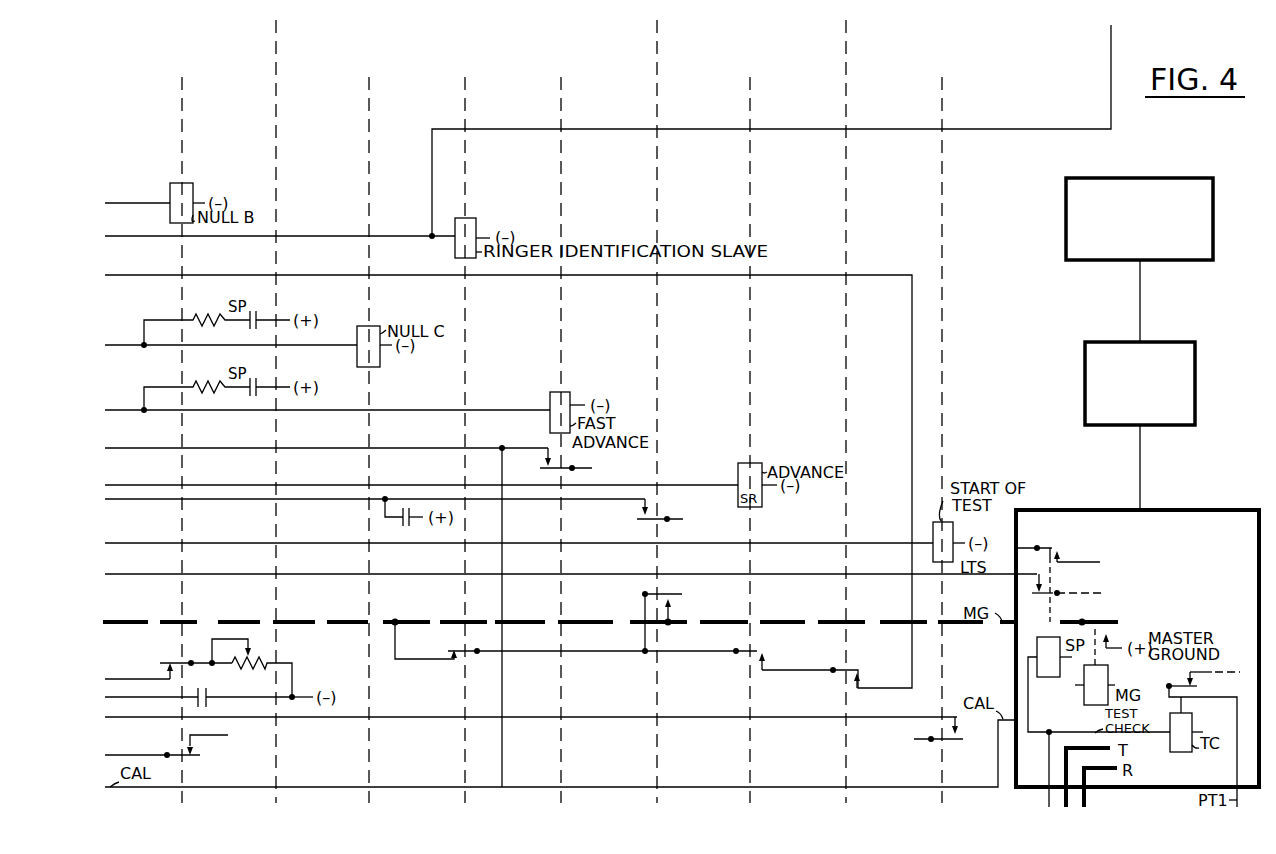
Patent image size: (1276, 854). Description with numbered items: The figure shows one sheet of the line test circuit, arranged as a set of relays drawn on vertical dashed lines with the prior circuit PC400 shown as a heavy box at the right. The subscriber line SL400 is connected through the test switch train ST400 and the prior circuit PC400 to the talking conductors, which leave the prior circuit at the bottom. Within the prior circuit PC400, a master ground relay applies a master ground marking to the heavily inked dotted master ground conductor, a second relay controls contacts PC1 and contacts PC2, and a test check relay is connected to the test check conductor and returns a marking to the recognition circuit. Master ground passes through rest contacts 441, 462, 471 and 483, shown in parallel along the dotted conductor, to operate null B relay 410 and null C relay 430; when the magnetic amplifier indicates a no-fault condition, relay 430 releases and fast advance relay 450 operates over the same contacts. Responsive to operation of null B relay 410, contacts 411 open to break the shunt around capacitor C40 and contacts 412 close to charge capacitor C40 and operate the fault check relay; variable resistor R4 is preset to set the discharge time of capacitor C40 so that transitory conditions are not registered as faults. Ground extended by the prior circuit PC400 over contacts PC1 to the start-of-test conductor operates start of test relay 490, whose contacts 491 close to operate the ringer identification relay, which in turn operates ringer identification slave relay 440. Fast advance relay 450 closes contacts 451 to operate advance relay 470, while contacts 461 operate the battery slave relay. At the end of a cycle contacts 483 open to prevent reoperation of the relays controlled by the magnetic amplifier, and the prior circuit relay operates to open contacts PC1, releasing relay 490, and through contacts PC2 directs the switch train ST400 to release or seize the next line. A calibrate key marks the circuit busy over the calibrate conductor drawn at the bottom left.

The null B relay 410 is at (182, 427).
The null C relay 430 is at (369, 427).
The ringer identification slave relay 440 is at (465, 427).
The fast advance relay 450 is at (561, 427).
The advance relay 470 is at (750, 427).
The start of test relay 490 is at (942, 428).
The contacts 411 is at (168, 667).
The contacts 412 is at (196, 745).
The contacts 441 is at (458, 656).
The contacts 451 is at (545, 466).
The contacts 461 is at (650, 512).
The contacts 462 is at (678, 602).
The contacts 471 is at (772, 658).
The contacts 483 is at (862, 676).
The contacts 491 is at (966, 731).
The subscriber line SL400 is at (1108, 178).
The test switch train ST400 is at (1148, 342).
The prior circuit PC400 is at (1182, 509).
The contacts PC1 is at (1046, 590).
The contacts PC2 is at (1060, 555).
The variable resistor R4 is at (250, 667).
The capacitor C40 is at (205, 689).